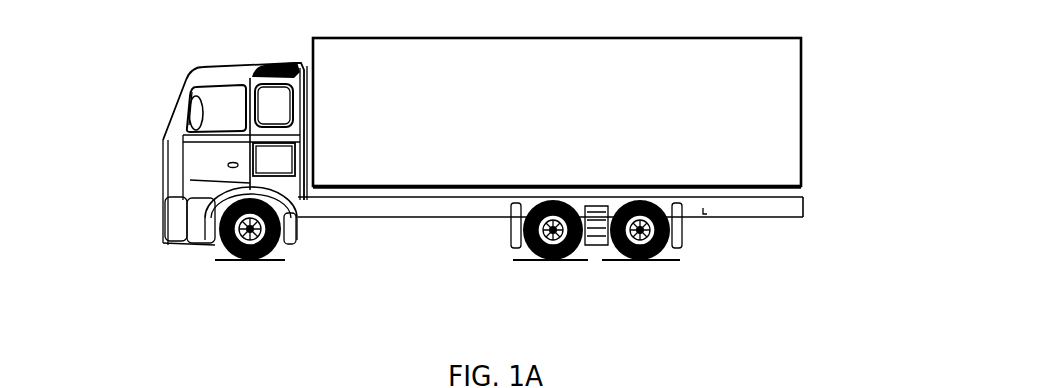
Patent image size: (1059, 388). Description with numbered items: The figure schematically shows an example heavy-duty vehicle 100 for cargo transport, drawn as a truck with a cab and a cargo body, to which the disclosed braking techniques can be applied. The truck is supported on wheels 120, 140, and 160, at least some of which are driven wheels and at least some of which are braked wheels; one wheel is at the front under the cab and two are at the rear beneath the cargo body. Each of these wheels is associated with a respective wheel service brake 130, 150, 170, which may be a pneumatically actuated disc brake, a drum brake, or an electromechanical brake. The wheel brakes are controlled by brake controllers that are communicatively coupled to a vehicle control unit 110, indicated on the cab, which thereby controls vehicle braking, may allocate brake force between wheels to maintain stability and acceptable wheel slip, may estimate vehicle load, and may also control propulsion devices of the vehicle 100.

The vehicle 100 is at (106, 53).
The vehicle control unit 110 is at (274, 159).
The wheel 120 is at (228, 252).
The wheel service brake 130 is at (257, 257).
The wheel 140 is at (525, 255).
The wheel service brake 150 is at (558, 258).
The wheel 160 is at (640, 260).
The wheel service brake 170 is at (652, 260).